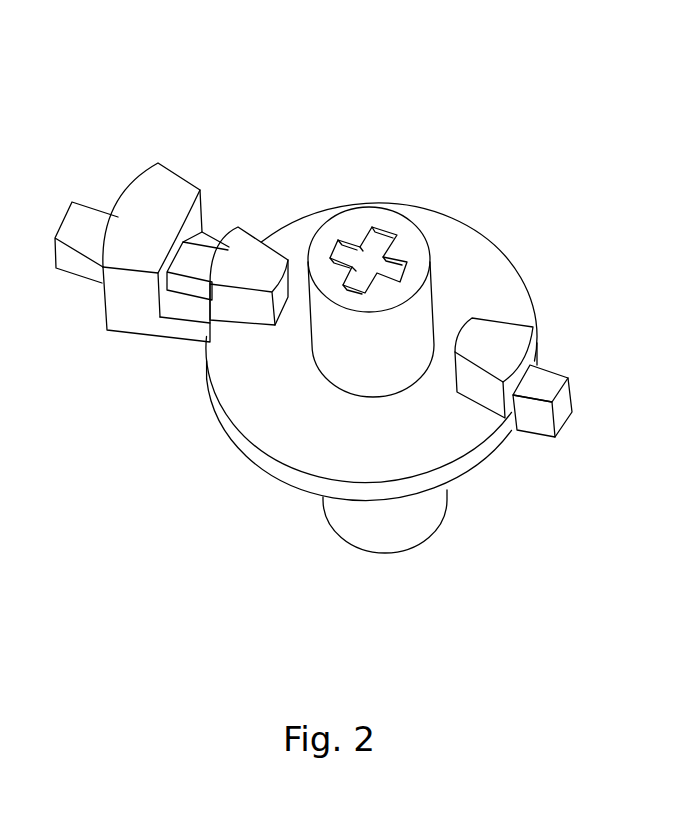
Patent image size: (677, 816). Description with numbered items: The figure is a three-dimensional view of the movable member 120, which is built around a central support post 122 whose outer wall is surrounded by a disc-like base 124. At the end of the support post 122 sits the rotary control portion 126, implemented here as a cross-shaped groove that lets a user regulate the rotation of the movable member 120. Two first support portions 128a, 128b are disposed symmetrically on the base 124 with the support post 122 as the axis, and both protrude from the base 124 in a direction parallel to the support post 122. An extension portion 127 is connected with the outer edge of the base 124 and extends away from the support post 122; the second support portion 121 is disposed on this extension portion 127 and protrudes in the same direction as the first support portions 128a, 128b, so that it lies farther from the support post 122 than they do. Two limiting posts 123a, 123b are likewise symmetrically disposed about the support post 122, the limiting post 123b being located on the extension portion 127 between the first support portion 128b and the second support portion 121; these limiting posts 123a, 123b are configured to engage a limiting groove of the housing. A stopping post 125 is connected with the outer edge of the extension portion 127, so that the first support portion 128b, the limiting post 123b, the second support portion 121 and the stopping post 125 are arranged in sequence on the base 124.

The movable member 120 is at (76, 92).
The second support portion 121 is at (172, 187).
The support post 122 is at (405, 513).
The limiting post 123a is at (543, 388).
The limiting post 123b is at (208, 257).
The base 124 is at (462, 263).
The stopping post 125 is at (78, 262).
The rotary control portion 126 is at (352, 257).
The extension portion 127 is at (177, 327).
The first support portion 128a is at (502, 335).
The first support portion 128b is at (257, 245).